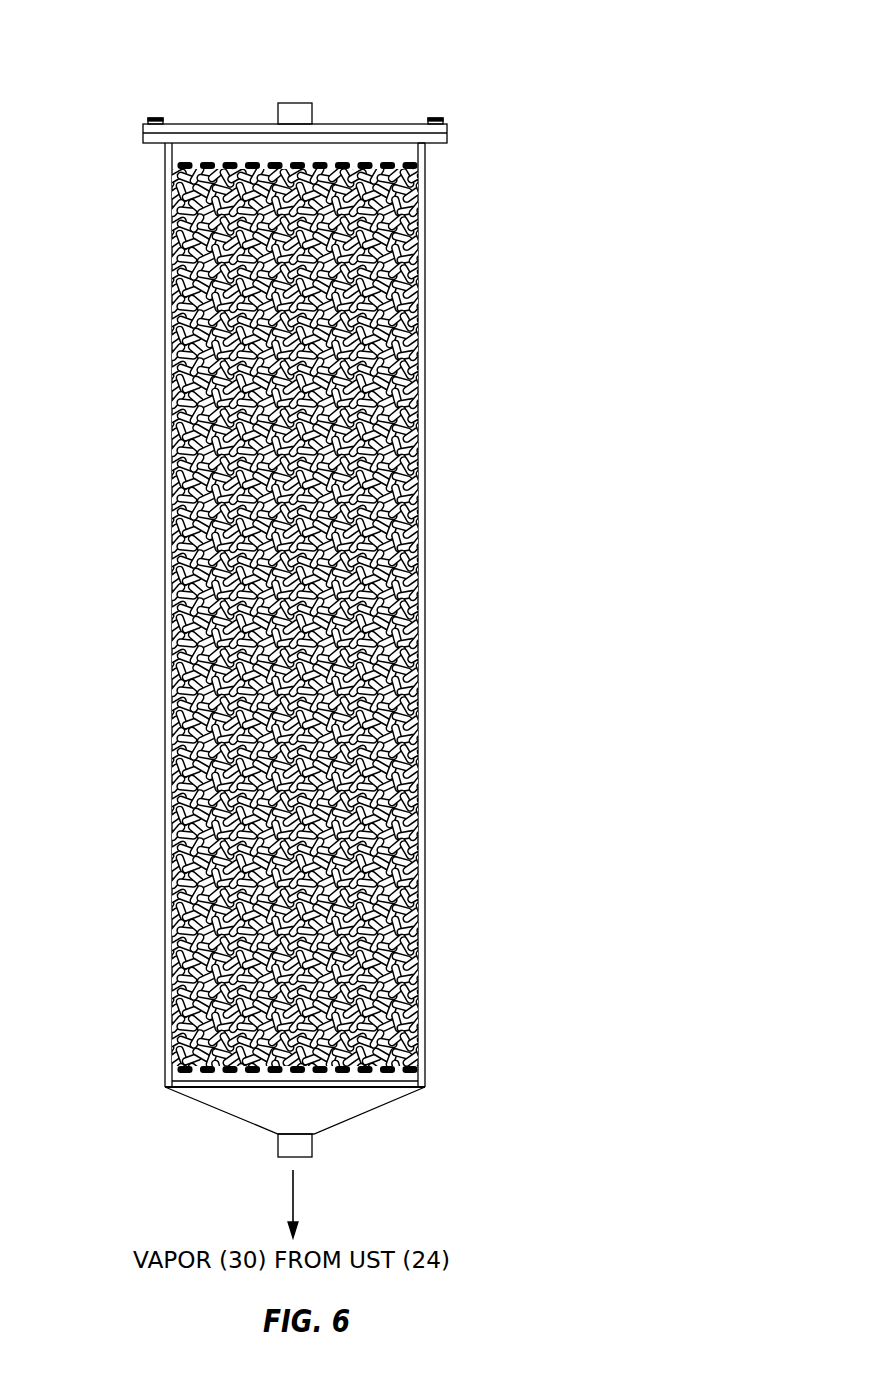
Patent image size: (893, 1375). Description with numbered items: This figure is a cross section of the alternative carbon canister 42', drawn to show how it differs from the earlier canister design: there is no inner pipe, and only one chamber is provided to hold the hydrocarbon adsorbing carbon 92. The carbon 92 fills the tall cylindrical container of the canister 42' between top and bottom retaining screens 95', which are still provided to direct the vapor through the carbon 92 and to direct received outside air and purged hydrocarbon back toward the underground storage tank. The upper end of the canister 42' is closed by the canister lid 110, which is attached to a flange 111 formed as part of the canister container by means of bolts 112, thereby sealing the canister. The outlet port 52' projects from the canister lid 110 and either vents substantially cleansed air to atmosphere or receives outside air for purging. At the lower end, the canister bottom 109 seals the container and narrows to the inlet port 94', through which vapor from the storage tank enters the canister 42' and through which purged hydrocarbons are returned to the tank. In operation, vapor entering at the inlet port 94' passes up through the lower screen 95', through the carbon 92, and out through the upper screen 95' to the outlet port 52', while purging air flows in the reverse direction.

The outlet port 52' is at (333, 65).
The canister lid 110 is at (367, 124).
The bolts 112 is at (147, 120).
The flange 111 is at (430, 143).
The retaining screens 95' is at (234, 617).
The carbon canister 42' is at (348, 615).
The hydrocarbon adsorbing carbon 92 is at (367, 547).
The canister bottom 109 is at (335, 1103).
The inlet port 94' is at (344, 1169).